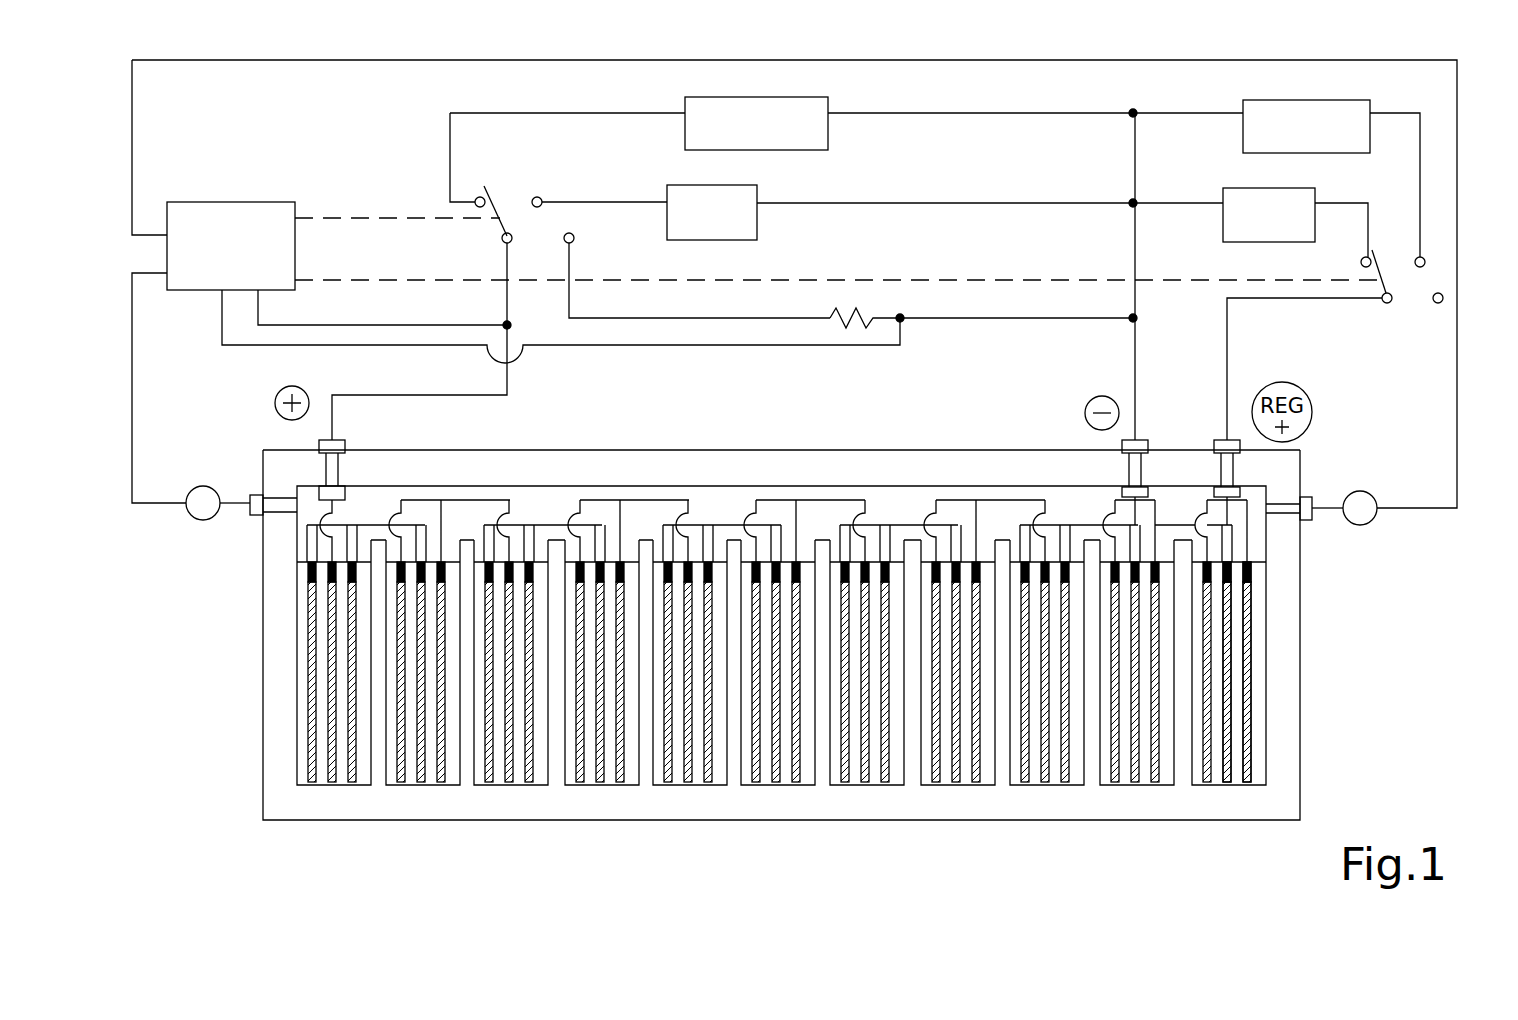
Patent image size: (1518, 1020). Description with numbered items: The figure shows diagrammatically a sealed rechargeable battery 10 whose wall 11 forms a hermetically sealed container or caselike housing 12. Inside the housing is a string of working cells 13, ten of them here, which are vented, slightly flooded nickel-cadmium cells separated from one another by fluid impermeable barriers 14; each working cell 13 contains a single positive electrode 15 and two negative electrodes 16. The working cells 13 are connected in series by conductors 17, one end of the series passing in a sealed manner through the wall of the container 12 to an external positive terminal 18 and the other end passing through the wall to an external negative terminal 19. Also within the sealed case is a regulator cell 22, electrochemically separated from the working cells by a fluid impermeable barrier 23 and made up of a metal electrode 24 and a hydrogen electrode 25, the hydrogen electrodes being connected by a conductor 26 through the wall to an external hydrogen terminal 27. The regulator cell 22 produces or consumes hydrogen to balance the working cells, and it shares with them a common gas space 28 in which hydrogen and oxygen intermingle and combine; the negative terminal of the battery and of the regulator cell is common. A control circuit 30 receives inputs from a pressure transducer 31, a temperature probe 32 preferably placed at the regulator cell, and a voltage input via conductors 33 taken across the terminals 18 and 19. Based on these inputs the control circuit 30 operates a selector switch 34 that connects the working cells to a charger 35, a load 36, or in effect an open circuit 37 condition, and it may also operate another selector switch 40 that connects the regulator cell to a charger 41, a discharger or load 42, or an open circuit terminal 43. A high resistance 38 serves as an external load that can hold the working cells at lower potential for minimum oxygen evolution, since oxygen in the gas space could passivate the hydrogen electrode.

The sealed rechargeable battery 10 is at (236, 657).
The wall 11 is at (895, 465).
The container 12 is at (735, 452).
The working cell 13 is at (340, 782).
The fluid impermeable barrier 14 is at (823, 768).
The positive electrode 15 is at (867, 773).
The negative electrode 16 is at (848, 773).
The conductor 17 is at (381, 522).
The external positive terminal 18 is at (344, 441).
The external negative terminal 19 is at (1147, 441).
The regulator cell 22 is at (1255, 612).
The fluid impermeable barrier 23 is at (1185, 777).
The metal electrode 24 is at (1228, 693).
The hydrogen electrode 25 is at (1208, 667).
The conductor 26 is at (1250, 510).
The external hydrogen terminal 27 is at (1232, 440).
The common gas space 28 is at (913, 498).
The control circuit 30 is at (233, 212).
The pressure transducer 31 is at (200, 520).
The temperature probe 32 is at (1368, 525).
The conductors 33 is at (432, 328).
The selector switch 34 is at (498, 207).
The charger 35 is at (740, 104).
The load 36 is at (737, 197).
The open circuit 37 is at (576, 244).
The high resistance 38 is at (832, 318).
The selector switch 40 is at (1393, 303).
The charger 41 is at (1260, 108).
The load 42 is at (1290, 200).
The open circuit terminal 43 is at (1445, 292).